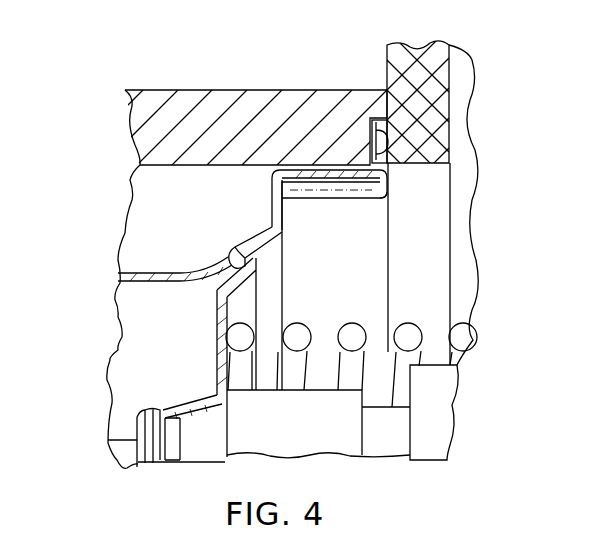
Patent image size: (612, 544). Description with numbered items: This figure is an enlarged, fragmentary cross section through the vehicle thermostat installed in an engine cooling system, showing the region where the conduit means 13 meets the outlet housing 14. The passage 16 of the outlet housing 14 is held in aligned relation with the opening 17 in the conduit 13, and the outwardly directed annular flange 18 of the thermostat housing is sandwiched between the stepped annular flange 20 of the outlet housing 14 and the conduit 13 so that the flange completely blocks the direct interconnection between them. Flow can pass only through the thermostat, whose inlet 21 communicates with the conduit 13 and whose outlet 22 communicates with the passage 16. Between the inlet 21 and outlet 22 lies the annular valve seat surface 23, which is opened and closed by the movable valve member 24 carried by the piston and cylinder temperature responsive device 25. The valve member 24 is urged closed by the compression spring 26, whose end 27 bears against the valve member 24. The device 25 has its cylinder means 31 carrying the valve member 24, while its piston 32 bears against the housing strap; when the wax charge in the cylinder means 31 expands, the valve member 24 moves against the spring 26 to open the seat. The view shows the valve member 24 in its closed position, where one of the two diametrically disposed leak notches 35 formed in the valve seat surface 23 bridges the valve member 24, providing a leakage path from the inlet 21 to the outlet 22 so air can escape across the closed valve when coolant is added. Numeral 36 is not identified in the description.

The conduit means 13 is at (437, 137).
The outlet housing 14 is at (210, 100).
The passage 16 is at (153, 170).
The opening 17 is at (467, 187).
The annular flange 18 is at (390, 127).
The stepped annular flange 20 is at (360, 110).
The inlet 21 is at (363, 285).
The outlet 22 is at (164, 312).
The annular valve seat surface 23 is at (228, 268).
The valve member 24 is at (217, 373).
The piston and cylinder temperature responsive device 25 is at (446, 415).
The compression spring 26 is at (420, 327).
The end of compression spring 27 is at (251, 326).
The cylinder means 31 is at (323, 442).
The piston 32 is at (125, 440).
The leak notch 35 is at (272, 247).
The gasket 36 is at (307, 167).